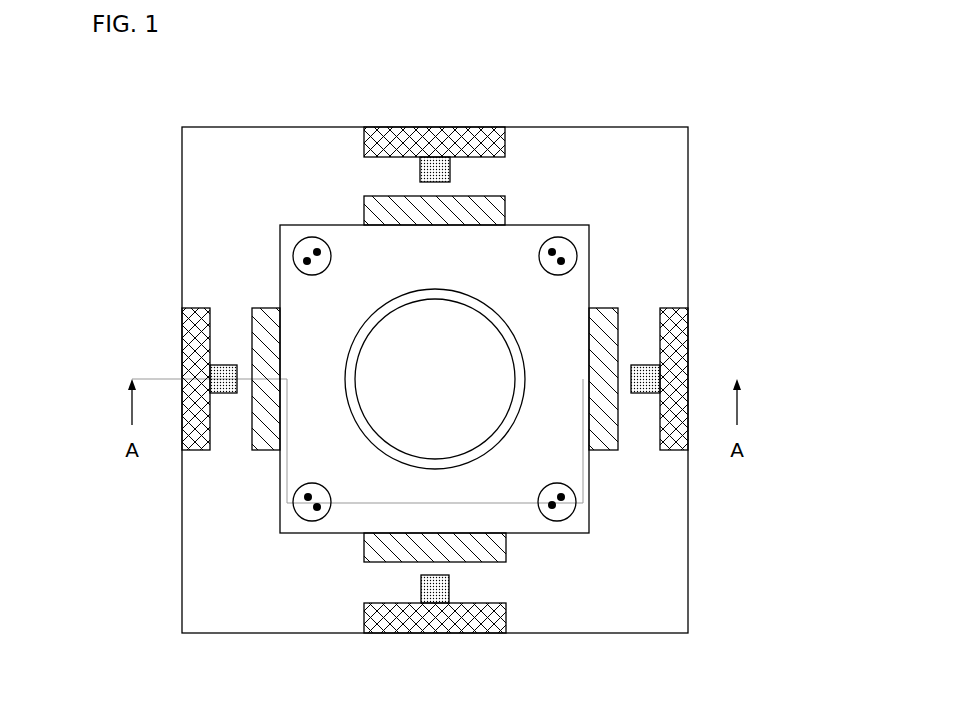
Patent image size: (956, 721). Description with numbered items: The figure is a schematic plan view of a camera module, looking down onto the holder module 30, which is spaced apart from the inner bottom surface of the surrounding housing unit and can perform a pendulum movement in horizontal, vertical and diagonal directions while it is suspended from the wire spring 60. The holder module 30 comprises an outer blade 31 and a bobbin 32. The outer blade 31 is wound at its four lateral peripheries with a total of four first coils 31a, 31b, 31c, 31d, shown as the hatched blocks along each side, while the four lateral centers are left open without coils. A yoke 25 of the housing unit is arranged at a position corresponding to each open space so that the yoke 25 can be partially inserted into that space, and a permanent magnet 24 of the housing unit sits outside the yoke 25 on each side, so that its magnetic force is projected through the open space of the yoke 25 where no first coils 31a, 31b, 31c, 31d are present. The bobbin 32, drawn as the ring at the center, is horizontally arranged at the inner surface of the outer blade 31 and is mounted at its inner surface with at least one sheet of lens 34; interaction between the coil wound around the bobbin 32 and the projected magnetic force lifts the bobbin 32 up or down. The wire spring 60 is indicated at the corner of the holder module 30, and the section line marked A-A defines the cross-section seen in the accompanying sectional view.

The holder module 30 is at (728, 95).
The outer blade 31 is at (589, 273).
The first coil 31a is at (263, 439).
The first coil 31b is at (370, 547).
The first coil 31c is at (603, 431).
The first coil 31d is at (488, 200).
The bobbin 32 is at (488, 308).
The lens 34 is at (385, 358).
The second permanent magnet 24 is at (192, 330).
The yoke 25 is at (647, 368).
The wire spring 60 is at (552, 505).